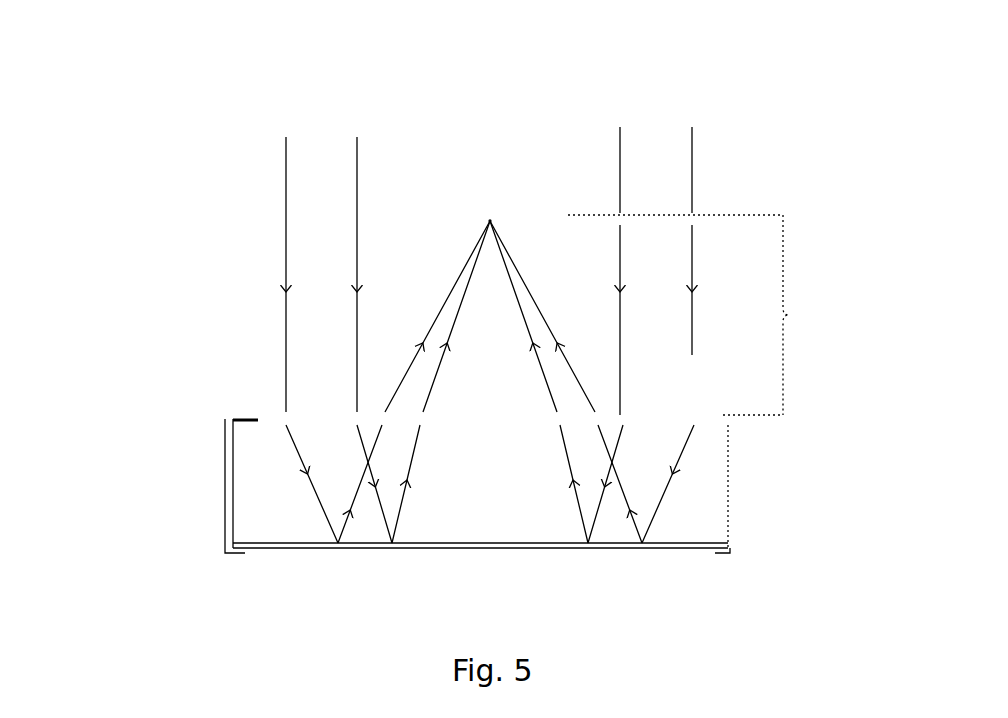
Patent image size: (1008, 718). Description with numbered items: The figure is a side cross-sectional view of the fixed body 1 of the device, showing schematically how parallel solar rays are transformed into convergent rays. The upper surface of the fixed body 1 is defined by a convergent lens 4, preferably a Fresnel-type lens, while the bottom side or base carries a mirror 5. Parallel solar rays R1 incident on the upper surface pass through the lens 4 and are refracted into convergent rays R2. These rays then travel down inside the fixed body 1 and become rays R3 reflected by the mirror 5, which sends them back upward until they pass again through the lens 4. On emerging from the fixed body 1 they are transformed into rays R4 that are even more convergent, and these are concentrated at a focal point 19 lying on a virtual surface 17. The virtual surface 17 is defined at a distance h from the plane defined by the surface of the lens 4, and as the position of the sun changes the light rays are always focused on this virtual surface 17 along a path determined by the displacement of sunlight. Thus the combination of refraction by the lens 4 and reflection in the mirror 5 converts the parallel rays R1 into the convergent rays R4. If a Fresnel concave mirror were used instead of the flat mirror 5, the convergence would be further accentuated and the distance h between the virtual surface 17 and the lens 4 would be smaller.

The fixed body 1 is at (185, 548).
The convergent lens 4 is at (269, 417).
The mirror 5 is at (690, 542).
The virtual surface 17 is at (453, 215).
The focal point 19 is at (491, 206).
The parallel solar rays R1 is at (280, 165).
The convergent rays R2 is at (290, 452).
The reflected rays R3 is at (406, 503).
The convergent rays R4 is at (436, 289).
The distance h is at (689, 381).